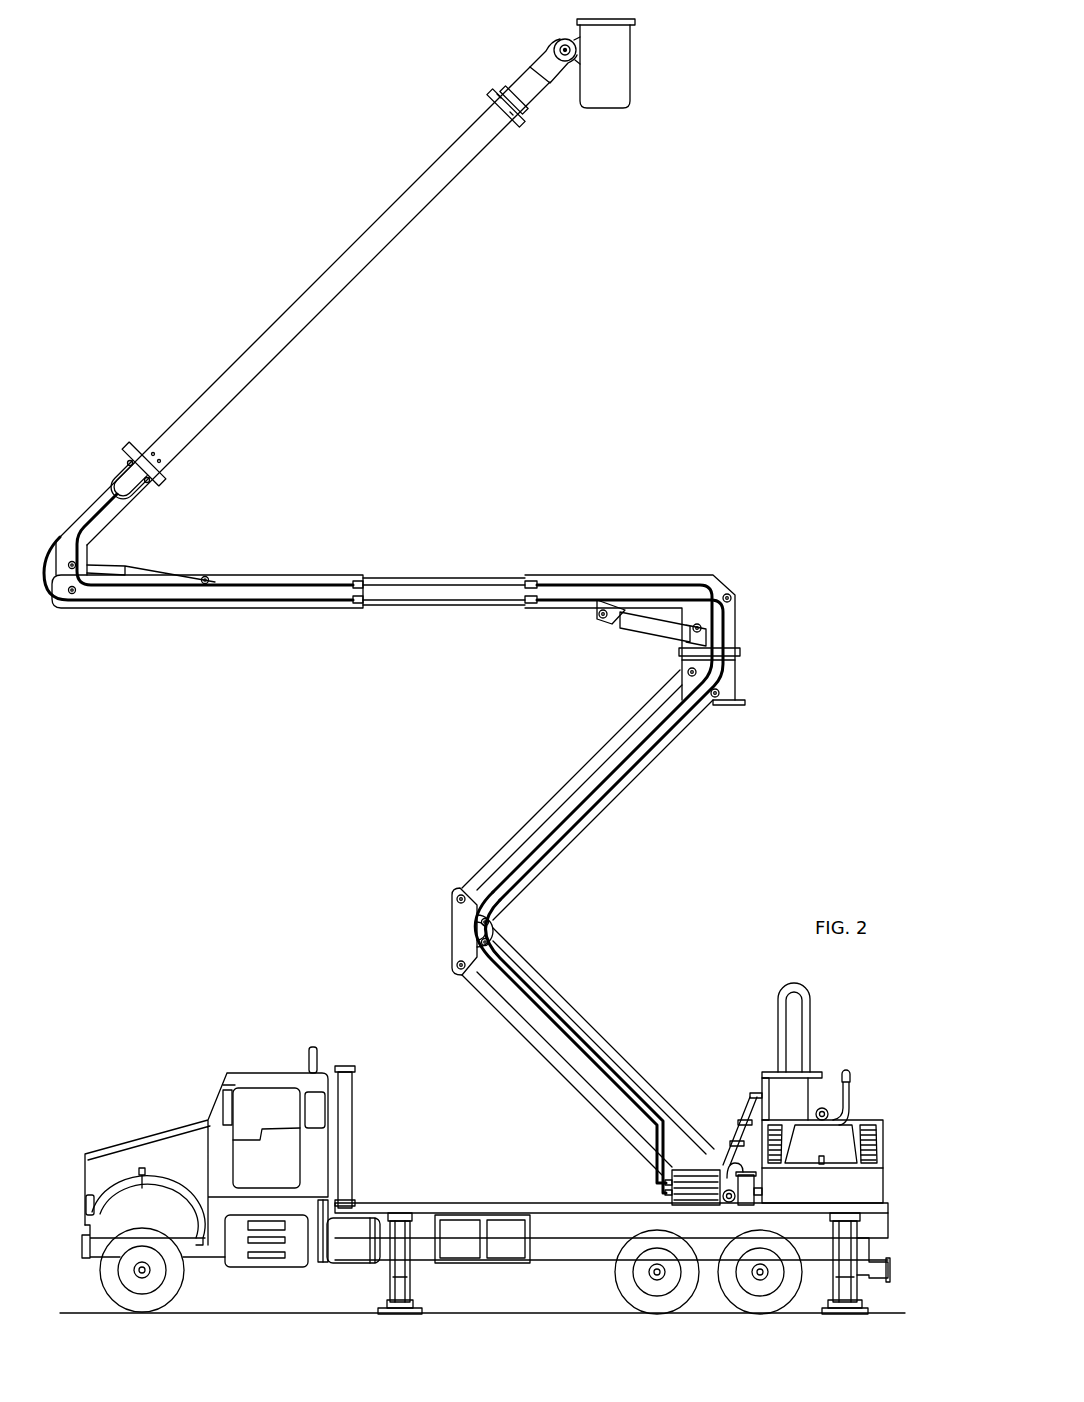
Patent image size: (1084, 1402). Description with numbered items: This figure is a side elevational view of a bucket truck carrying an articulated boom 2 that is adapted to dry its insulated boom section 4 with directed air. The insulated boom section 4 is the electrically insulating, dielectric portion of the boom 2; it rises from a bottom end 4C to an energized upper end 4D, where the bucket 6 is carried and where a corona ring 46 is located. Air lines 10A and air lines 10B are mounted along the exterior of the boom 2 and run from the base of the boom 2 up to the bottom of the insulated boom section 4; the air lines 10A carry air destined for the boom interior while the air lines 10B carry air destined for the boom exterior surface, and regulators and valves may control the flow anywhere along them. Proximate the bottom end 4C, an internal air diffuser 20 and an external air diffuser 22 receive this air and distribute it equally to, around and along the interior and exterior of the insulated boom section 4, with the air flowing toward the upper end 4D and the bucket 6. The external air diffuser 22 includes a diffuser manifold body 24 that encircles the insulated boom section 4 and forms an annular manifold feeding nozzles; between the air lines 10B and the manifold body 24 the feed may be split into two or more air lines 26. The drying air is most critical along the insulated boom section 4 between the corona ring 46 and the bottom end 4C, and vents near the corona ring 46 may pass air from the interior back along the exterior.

The boom 2 is at (498, 818).
The insulated boom section 4 is at (420, 210).
The bottom end of the insulated boom section 4C is at (95, 537).
The upper end of the insulated boom section 4D is at (516, 70).
The bucket 6 is at (631, 68).
The air lines 10A is at (277, 600).
The air lines 10B is at (548, 582).
The internal air diffuser 20 is at (57, 537).
The external air diffuser 22 is at (125, 447).
The diffuser manifold body 24 is at (158, 485).
The air lines 26 is at (113, 480).
The corona ring 46 is at (528, 118).